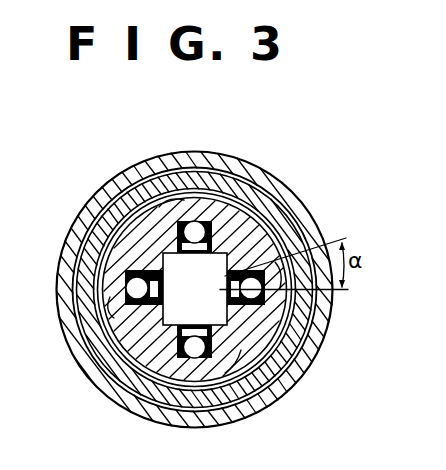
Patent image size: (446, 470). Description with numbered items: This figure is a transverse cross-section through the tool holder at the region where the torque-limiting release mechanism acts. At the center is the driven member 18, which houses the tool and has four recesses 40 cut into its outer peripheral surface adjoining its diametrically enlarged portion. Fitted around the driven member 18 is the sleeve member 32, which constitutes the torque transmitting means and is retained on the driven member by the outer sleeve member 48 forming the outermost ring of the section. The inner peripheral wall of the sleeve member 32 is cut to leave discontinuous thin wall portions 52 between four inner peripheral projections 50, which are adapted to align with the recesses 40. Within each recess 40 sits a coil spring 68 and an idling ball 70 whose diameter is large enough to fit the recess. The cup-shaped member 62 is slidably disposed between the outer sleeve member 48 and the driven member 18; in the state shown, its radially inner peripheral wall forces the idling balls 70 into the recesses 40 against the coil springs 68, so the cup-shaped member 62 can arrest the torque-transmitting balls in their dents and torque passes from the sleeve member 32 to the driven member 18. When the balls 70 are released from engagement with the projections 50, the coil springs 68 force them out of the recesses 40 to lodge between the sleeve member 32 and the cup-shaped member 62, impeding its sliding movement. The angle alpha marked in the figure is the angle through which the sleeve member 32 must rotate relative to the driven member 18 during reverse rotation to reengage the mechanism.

The driven member 18 is at (251, 372).
The sleeve member 32 is at (122, 227).
The recesses 40 is at (199, 253).
The outer sleeve member 48 is at (317, 317).
The inner peripheral projections 50 is at (167, 195).
The discontinuous thin wall portions 52 is at (250, 190).
The cup-shaped member 62 is at (286, 213).
The coil springs 68 is at (177, 250).
The balls 70 is at (200, 220).